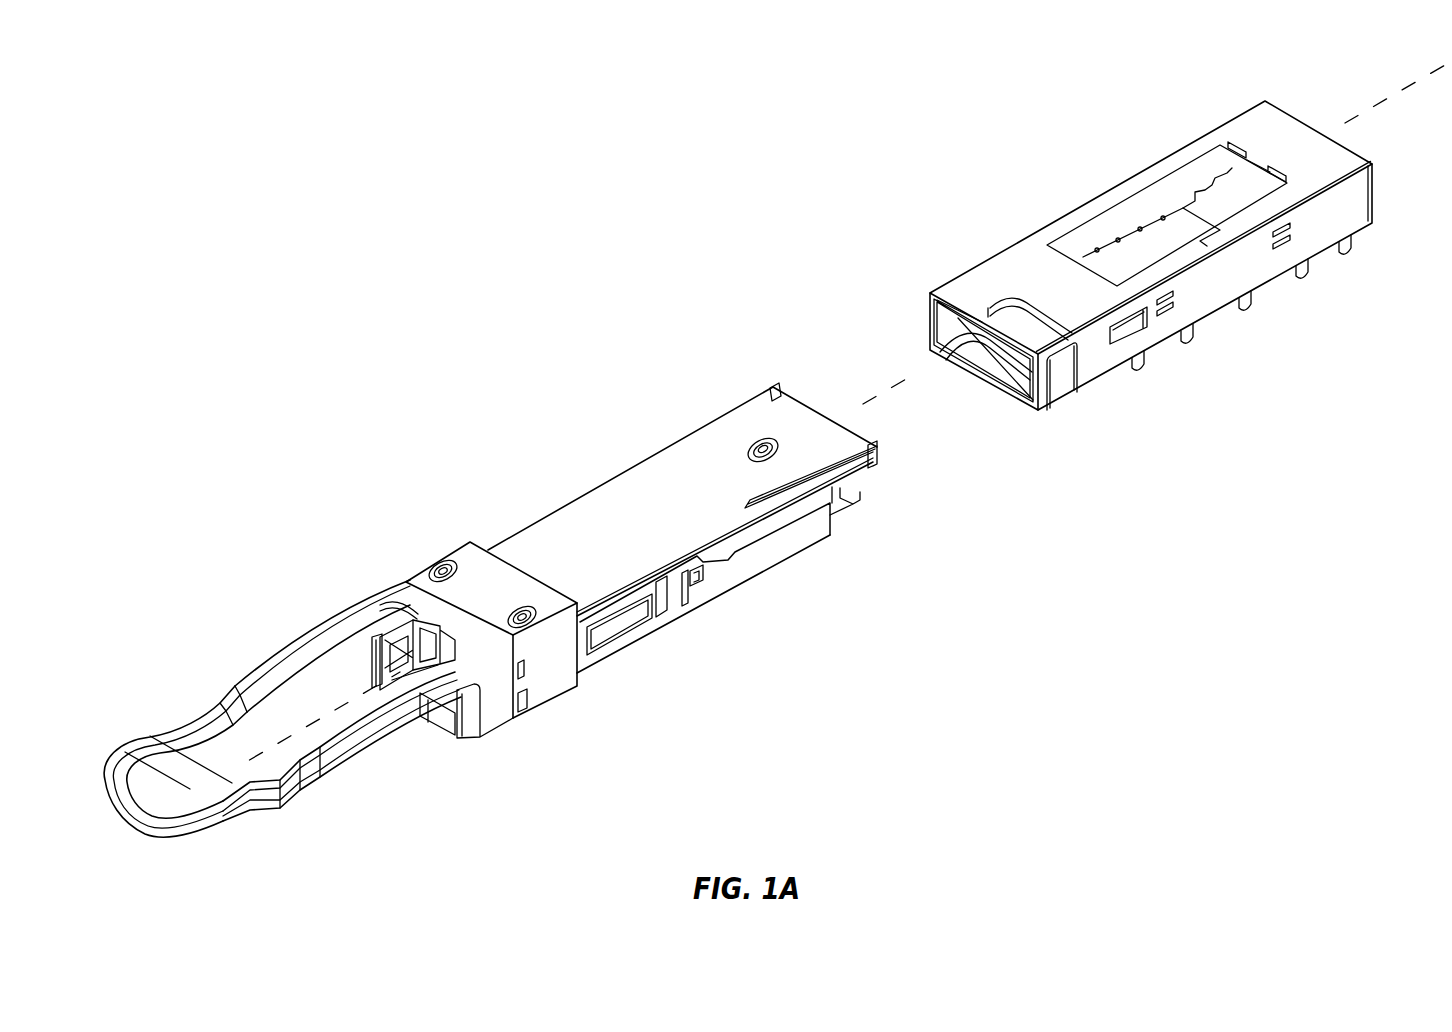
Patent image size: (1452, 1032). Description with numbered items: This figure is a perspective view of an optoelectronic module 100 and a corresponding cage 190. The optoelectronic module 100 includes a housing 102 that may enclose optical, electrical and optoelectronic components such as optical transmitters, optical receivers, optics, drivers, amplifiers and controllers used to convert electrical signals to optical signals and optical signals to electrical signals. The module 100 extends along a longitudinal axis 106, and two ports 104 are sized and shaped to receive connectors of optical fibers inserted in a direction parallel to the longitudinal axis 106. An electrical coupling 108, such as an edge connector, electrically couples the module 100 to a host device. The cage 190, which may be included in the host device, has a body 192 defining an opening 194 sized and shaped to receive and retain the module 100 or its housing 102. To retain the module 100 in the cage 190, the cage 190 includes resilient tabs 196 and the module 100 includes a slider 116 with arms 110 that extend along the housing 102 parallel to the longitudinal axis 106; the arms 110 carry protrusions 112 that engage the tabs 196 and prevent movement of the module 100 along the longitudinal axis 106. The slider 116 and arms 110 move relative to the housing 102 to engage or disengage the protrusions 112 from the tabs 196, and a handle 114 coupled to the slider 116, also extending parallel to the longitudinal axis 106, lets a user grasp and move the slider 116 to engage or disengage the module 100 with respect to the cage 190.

The optoelectronic module 100 is at (262, 462).
The housing 102 is at (627, 485).
The ports 104 is at (395, 677).
The longitudinal axis 106 is at (1360, 118).
The electrical coupling 108 is at (850, 497).
The arms 110 is at (560, 675).
The protrusions 112 is at (700, 577).
The handle 114 is at (163, 822).
The slider 116 is at (538, 692).
The cage 190 is at (1288, 78).
The body 192 is at (1342, 225).
The opening 194 is at (995, 341).
The resilient tabs 196 is at (1143, 320).